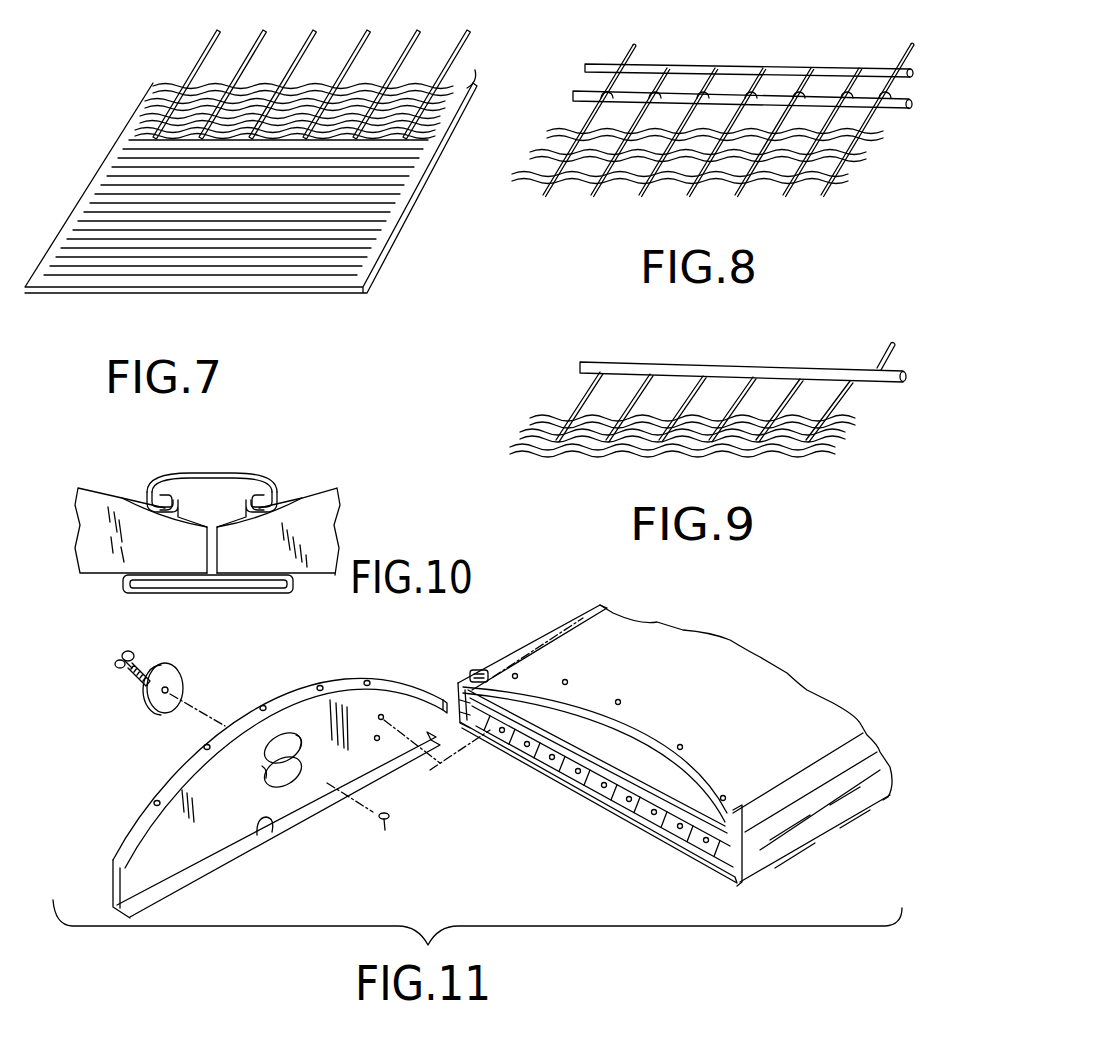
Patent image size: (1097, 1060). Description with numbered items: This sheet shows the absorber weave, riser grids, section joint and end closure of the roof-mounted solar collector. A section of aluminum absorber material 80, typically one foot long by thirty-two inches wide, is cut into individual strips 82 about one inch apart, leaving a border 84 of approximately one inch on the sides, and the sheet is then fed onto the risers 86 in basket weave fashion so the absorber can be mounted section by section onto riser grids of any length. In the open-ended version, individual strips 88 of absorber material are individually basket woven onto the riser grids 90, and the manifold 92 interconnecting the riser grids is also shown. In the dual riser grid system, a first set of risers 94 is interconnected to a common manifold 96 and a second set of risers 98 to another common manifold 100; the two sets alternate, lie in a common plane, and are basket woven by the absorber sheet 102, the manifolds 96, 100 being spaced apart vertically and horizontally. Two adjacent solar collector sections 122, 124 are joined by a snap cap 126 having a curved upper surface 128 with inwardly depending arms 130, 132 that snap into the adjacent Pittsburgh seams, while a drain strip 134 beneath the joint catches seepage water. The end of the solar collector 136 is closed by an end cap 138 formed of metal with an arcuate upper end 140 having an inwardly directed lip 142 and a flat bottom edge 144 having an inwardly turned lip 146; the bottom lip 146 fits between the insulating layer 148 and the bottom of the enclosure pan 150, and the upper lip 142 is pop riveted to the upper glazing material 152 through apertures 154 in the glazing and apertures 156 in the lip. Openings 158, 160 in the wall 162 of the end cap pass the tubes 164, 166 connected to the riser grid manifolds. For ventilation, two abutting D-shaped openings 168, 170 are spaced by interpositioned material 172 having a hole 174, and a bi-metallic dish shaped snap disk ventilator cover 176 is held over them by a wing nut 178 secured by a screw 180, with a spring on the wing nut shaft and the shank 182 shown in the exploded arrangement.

In FIG. 7, the aluminum absorber material 80 is at (390, 246).
In FIG. 7, the individual strips 82 is at (415, 91).
In FIG. 7, the border 84 is at (476, 80).
In FIG. 7, the risers 86 is at (355, 50).
In FIG. 9, the individual strips of absorber material 88 is at (853, 430).
In FIG. 9, the riser grids 90 is at (832, 396).
In FIG. 9, the manifold 92 is at (769, 370).
In FIG. 8, the first set of risers 94 is at (637, 95).
In FIG. 8, the common manifold 96 is at (680, 65).
In FIG. 8, the second set of risers 98 is at (720, 97).
In FIG. 8, the common manifold 100 is at (893, 108).
In FIG. 8, the absorber sheet 102 is at (850, 172).
In FIG. 10, the solar collector section 122 is at (325, 492).
In FIG. 10, the solar collector section 124 is at (92, 499).
In FIG. 10, the snap cap 126 is at (245, 476).
In FIG. 10, the curved upper surface 128 is at (206, 470).
In FIG. 10, the inwardly depending arm 130 is at (327, 527).
In FIG. 10, the inwardly depending arm 132 is at (150, 517).
In FIG. 10, the drain strip 134 is at (250, 593).
In FIG. 11, the solar collector 136 is at (832, 715).
In FIG. 11, the end cap 138 is at (119, 843).
In FIG. 11, the arcuate upper end 140 is at (275, 692).
In FIG. 11, the inwardly directed lip 142 is at (337, 682).
In FIG. 11, the flat bottom edge 144 is at (270, 840).
In FIG. 11, the inwardly turned lip 146 is at (317, 802).
In FIG. 11, the insulating layer 148 is at (680, 832).
In FIG. 11, the enclosure pan 150 is at (638, 832).
In FIG. 11, the upper glazing material 152 is at (567, 650).
In FIG. 11, the apertures 154 is at (515, 673).
In FIG. 11, the apertures 156 is at (372, 680).
In FIG. 11, the opening 158 is at (378, 717).
In FIG. 11, the opening 160 is at (374, 741).
In FIG. 11, the wall 162 is at (160, 857).
In FIG. 11, the tube 164 is at (485, 725).
In FIG. 11, the tube 166 is at (495, 738).
In FIG. 11, the D-shaped opening 168 is at (270, 745).
In FIG. 11, the D-shaped opening 170 is at (268, 785).
In FIG. 11, the interpositioned material 172 is at (296, 745).
In FIG. 11, the hole 174 is at (262, 770).
In FIG. 11, the snap disk ventilator cover 176 is at (158, 712).
In FIG. 11, the wing nut 178 is at (120, 670).
In FIG. 11, the screw 180 is at (385, 832).
In FIG. 11, the shank 182 is at (141, 682).